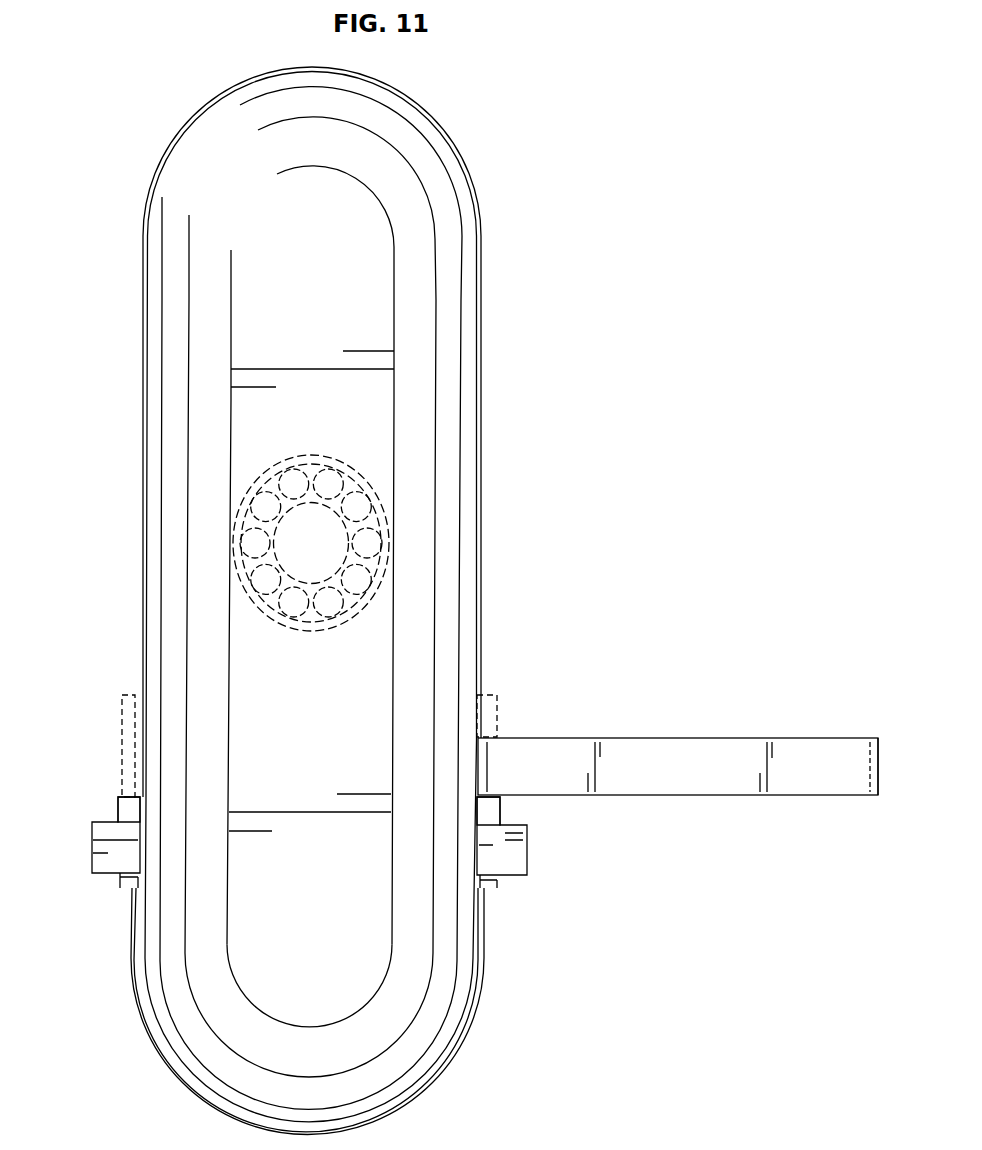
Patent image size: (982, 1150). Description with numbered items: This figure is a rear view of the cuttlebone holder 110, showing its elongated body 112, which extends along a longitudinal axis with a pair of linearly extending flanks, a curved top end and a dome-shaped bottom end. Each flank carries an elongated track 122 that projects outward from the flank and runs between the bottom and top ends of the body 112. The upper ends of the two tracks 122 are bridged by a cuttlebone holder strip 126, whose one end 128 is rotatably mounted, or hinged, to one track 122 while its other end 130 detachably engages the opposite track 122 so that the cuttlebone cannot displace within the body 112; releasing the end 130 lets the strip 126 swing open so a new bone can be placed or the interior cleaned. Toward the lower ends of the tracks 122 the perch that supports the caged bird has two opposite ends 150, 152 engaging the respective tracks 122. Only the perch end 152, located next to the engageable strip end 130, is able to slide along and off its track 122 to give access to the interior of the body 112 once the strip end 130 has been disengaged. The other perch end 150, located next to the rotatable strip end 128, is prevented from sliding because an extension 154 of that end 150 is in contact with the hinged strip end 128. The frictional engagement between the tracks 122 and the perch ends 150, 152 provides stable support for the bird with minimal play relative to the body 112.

The cuttlebone holder 110 is at (527, 403).
The elongated body 112 is at (473, 285).
The elongated track 122 is at (127, 698).
The cuttlebone holder strip 126 is at (660, 737).
The strip end 128 is at (480, 757).
The strip end 130 is at (860, 757).
The perch end 150 is at (525, 843).
The perch end 152 is at (132, 860).
The extension 154 is at (123, 803).